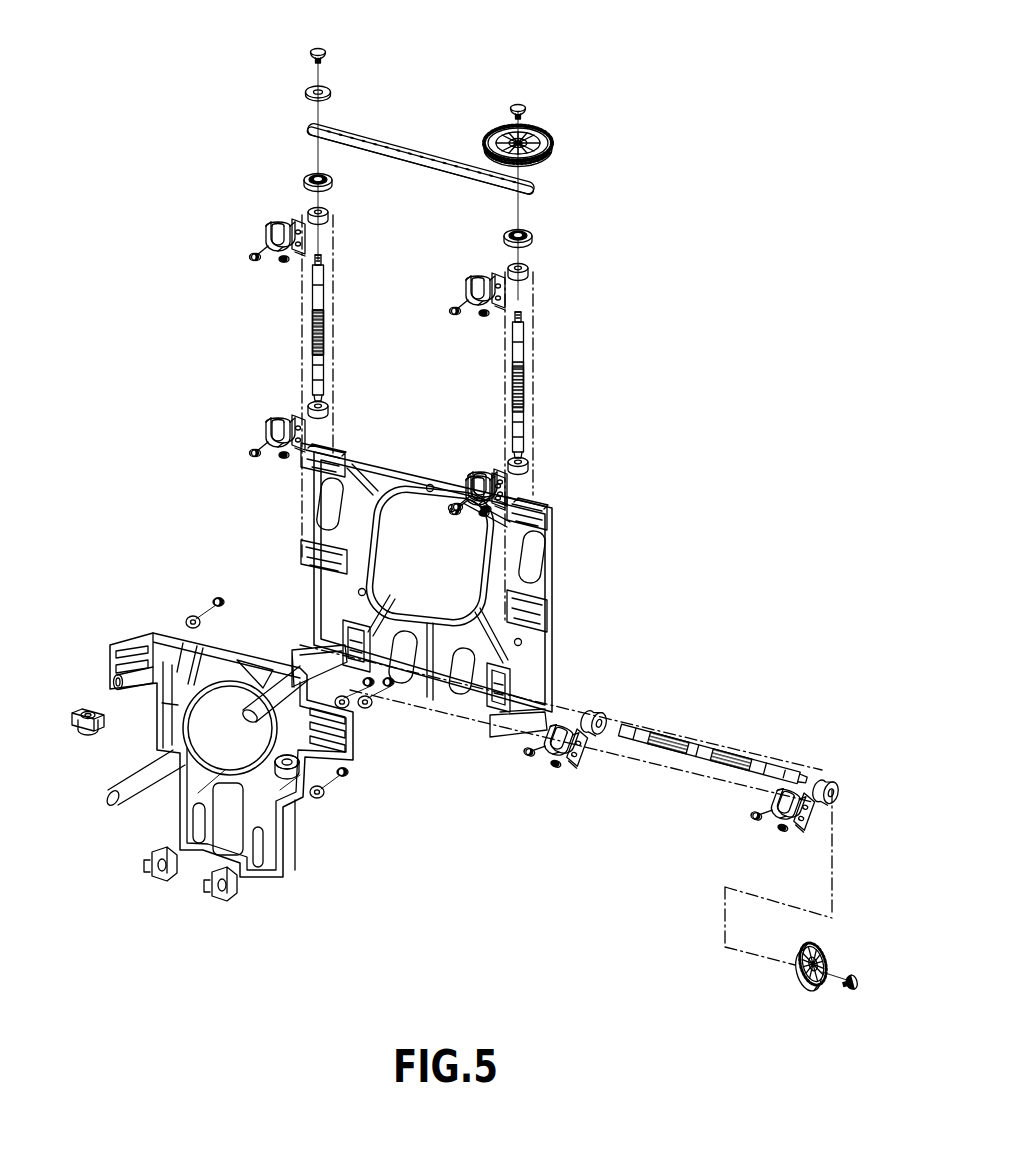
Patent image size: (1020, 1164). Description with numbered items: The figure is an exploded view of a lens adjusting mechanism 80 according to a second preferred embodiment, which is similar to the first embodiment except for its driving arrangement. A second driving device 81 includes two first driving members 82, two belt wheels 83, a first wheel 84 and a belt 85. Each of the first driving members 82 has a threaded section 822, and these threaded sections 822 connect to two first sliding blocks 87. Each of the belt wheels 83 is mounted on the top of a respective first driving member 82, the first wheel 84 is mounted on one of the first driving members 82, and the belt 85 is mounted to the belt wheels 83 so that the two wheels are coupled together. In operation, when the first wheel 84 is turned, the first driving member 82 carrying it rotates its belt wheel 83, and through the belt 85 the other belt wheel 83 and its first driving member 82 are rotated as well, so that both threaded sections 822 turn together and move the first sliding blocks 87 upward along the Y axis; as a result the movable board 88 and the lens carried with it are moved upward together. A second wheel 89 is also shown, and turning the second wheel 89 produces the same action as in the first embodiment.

The lens adjusting mechanism 80 is at (730, 234).
The second driving device 81 is at (509, 80).
The first driving member 82 is at (315, 283).
The threaded section 822 is at (316, 318).
The belt wheel 83 is at (310, 177).
The first wheel 84 is at (548, 130).
The belt 85 is at (396, 150).
The first sliding block 87 is at (85, 754).
The movable board 88 is at (145, 622).
The second wheel 89 is at (810, 990).